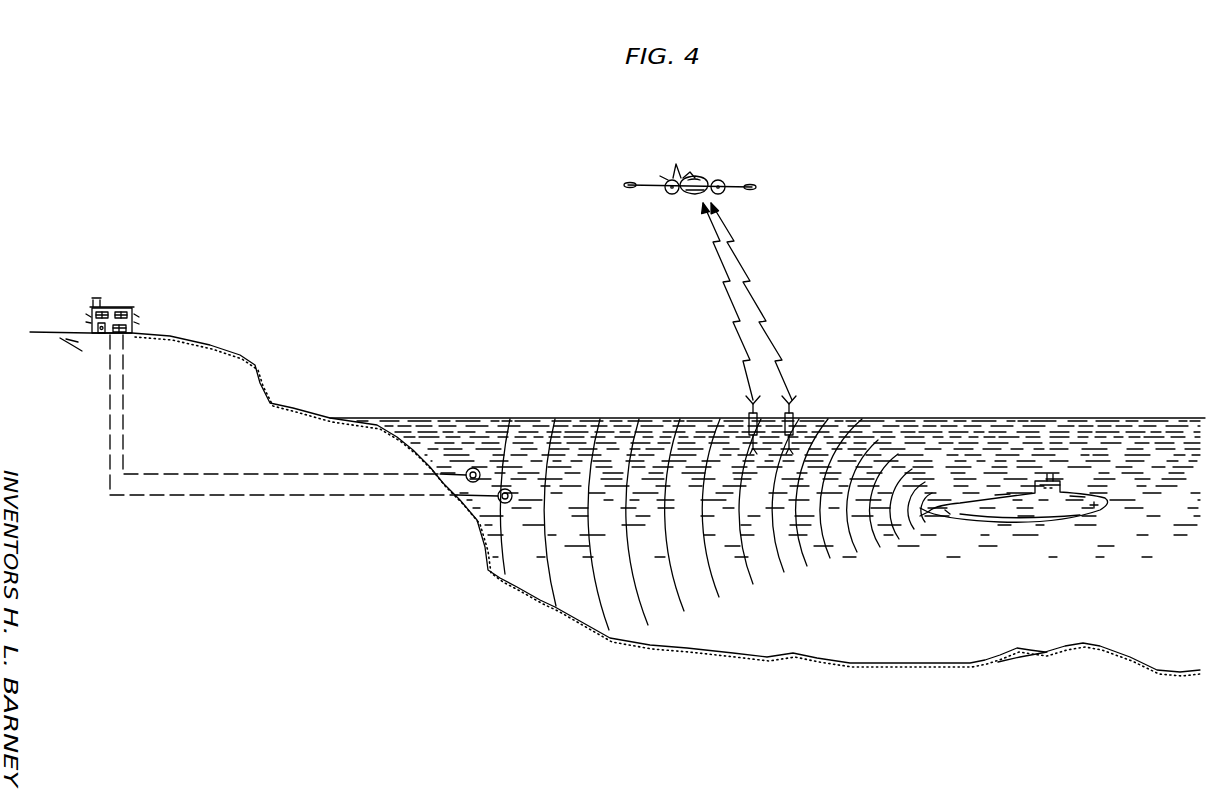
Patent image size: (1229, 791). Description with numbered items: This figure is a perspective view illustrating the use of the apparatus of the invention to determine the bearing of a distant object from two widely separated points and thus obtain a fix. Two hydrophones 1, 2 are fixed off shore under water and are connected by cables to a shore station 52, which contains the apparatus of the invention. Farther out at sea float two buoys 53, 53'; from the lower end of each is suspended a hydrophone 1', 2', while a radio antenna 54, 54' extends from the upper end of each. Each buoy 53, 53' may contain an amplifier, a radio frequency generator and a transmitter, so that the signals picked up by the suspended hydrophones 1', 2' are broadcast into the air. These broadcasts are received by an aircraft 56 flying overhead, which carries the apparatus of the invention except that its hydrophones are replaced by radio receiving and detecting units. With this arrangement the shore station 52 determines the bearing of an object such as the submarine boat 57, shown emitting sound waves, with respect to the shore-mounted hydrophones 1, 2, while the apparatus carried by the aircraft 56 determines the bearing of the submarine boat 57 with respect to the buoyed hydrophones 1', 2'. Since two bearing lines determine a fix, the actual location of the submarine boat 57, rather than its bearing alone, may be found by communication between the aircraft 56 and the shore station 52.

The shore station apparatus 52 is at (134, 311).
The aircraft 56 is at (722, 180).
The buoy 53 is at (729, 419).
The buoy 53' is at (823, 417).
The radio antenna 54 is at (731, 385).
The radio antenna 54' is at (821, 385).
The hydrophone 1 is at (480, 460).
The hydrophone 2 is at (514, 488).
The hydrophone 1' is at (739, 447).
The hydrophone 2' is at (789, 462).
The submarine boat 57 is at (968, 507).